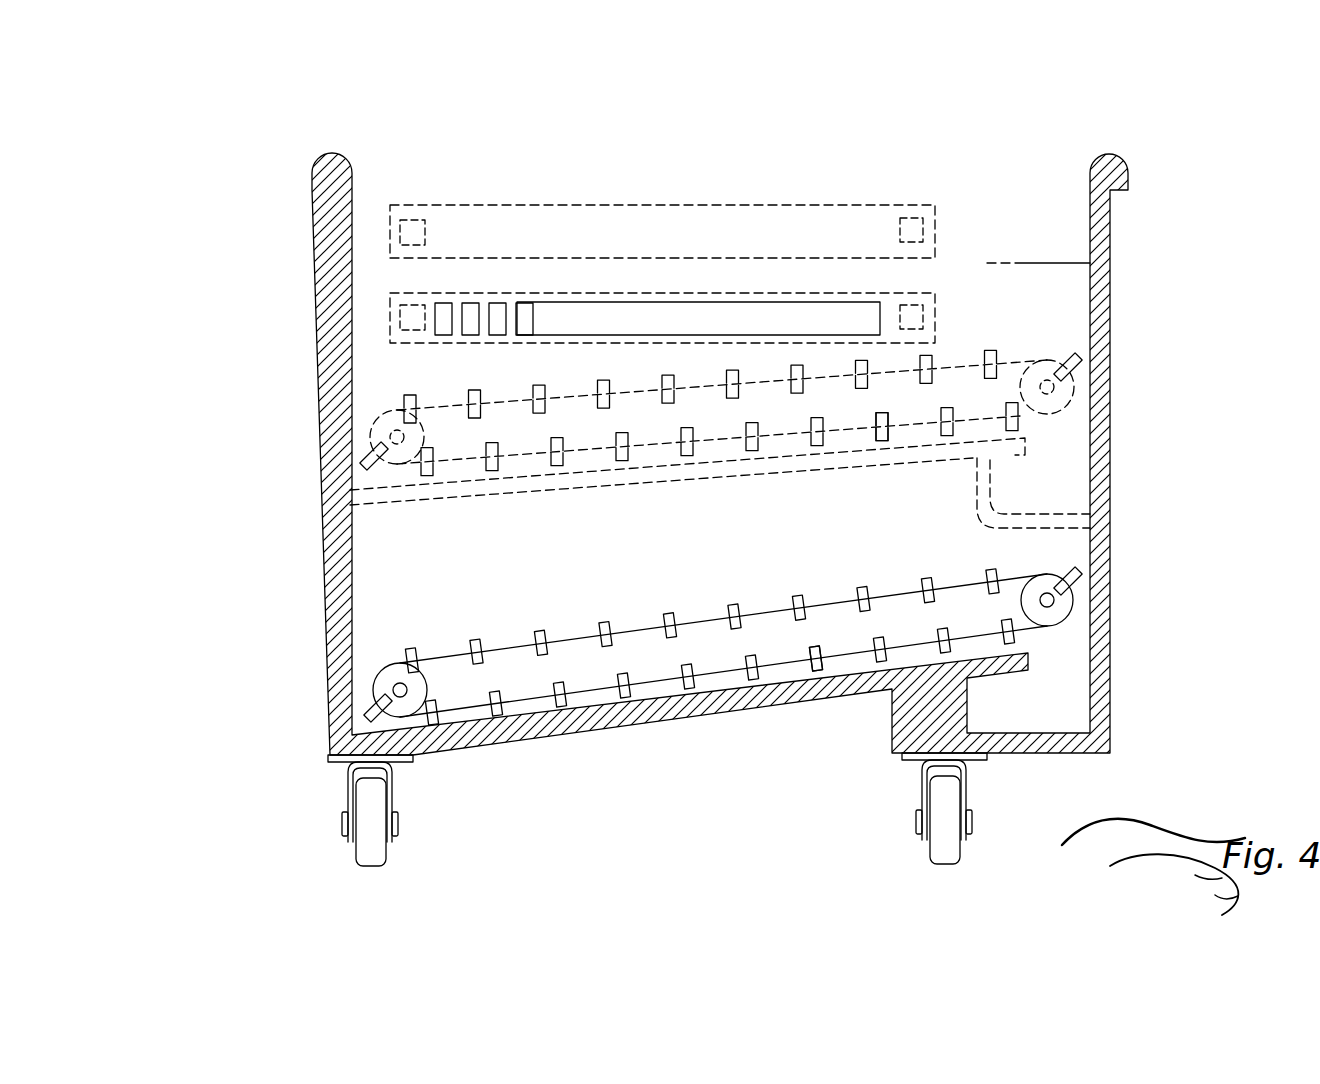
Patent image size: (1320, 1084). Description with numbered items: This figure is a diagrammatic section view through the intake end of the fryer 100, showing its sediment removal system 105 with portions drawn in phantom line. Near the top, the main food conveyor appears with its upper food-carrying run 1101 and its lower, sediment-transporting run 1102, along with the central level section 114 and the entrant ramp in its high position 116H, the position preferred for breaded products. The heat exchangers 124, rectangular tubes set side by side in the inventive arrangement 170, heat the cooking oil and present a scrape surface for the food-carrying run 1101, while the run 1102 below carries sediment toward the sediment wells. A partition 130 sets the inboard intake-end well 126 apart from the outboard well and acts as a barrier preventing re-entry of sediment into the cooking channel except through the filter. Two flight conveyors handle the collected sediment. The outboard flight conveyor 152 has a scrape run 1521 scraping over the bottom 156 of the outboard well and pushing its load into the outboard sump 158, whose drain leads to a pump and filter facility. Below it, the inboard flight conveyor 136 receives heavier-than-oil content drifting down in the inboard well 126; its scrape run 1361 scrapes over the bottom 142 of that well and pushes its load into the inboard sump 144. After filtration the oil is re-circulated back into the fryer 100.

The fryer 100 is at (313, 103).
The sediment removal system 105 is at (270, 793).
The upper food-carrying run 1101 is at (885, 160).
The lower sediment-transporting run 1102 is at (653, 180).
The high ramp position 116H is at (483, 205).
The central level section 114 is at (935, 300).
The heat exchangers 124 is at (440, 338).
The inventive arrangement 170 is at (594, 337).
The partition 130 is at (1062, 263).
The outboard flight conveyor 152 is at (993, 352).
The outboard scrape run 1521 is at (872, 440).
The bottom for the outboard sediment well 156 is at (698, 480).
The outboard sump 158 is at (1037, 503).
The inboard intake-end well 126 is at (637, 570).
The inboard flight conveyor 136 is at (478, 634).
The scrape run of the inboard flight conveyor 1361 is at (815, 648).
The inboard sump 144 is at (1043, 715).
The bottom for the inboard well 142 is at (790, 700).